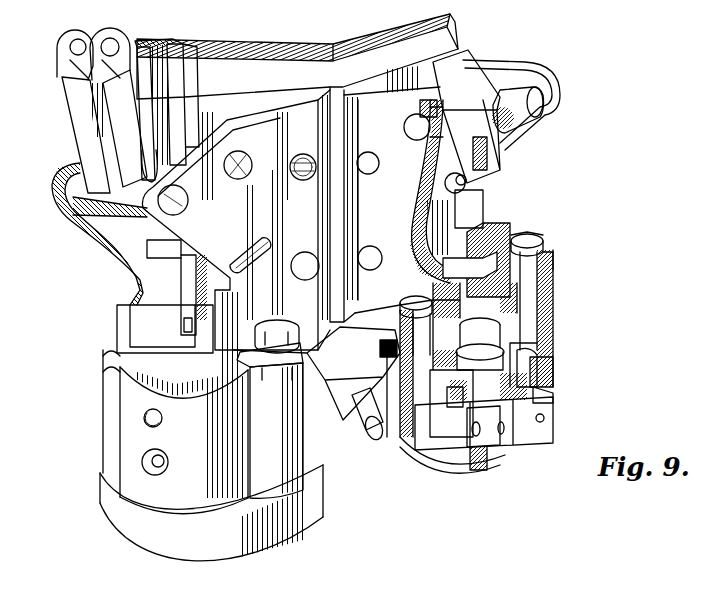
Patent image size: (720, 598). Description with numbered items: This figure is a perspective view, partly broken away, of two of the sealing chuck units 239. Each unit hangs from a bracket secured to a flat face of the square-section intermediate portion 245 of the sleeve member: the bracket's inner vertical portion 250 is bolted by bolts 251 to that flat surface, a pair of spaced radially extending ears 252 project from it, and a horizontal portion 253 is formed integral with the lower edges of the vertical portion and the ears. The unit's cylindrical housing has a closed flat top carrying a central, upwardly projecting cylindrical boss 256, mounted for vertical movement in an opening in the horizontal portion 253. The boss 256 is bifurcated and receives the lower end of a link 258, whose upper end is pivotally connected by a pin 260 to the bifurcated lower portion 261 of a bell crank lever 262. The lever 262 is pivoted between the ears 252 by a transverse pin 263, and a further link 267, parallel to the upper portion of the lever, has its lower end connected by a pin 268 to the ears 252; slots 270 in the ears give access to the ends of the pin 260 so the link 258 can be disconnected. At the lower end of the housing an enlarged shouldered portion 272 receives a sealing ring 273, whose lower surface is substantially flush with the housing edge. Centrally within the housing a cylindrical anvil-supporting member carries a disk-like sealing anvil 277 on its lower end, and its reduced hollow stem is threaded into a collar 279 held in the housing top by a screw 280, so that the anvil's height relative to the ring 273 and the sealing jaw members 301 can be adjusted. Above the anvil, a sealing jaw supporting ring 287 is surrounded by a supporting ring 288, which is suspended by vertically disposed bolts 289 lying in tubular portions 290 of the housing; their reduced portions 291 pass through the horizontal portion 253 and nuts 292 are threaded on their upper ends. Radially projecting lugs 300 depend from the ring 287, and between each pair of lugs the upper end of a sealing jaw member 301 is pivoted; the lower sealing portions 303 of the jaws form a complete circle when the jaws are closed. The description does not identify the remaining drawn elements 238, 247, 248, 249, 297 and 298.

The bracket arm 238 is at (108, 252).
The sealing chuck unit 239 is at (101, 406).
The intermediate portion 245 is at (262, 62).
The pin 247 is at (363, 412).
The bracket 248 is at (323, 384).
The pin head 249 is at (373, 441).
The inner vertical portion 250 is at (343, 90).
The bolts 251 is at (305, 154).
The ears 252 is at (60, 180).
The horizontal portion 253 is at (132, 345).
The cylindrical boss 256 is at (182, 323).
The link 258 is at (185, 279).
The pin 260 is at (463, 186).
The bifurcated lower portion 261 is at (507, 142).
The bell crank lever 262 is at (170, 70).
The transverse pin 263 is at (240, 180).
The link 267 is at (78, 111).
The pin 268 is at (175, 208).
The slots 270 is at (243, 245).
The enlarged shouldered portion 272 is at (100, 508).
The sealing ring 273 is at (410, 453).
The sealing anvil 277 is at (490, 444).
The collar 279 is at (507, 323).
The screw 280 is at (162, 418).
The sealing jaw supporting ring 287 is at (545, 337).
The supporting ring 288 is at (540, 353).
The bolts 289 is at (265, 373).
The tubular portions 290 is at (283, 436).
The reduced portions 291 is at (547, 260).
The nuts 292 is at (540, 236).
The screw 297 is at (168, 464).
The screw slot 298 is at (163, 458).
The lugs 300 is at (510, 433).
The sealing jaw members 301 is at (555, 392).
The lower sealing portions 303 is at (480, 471).